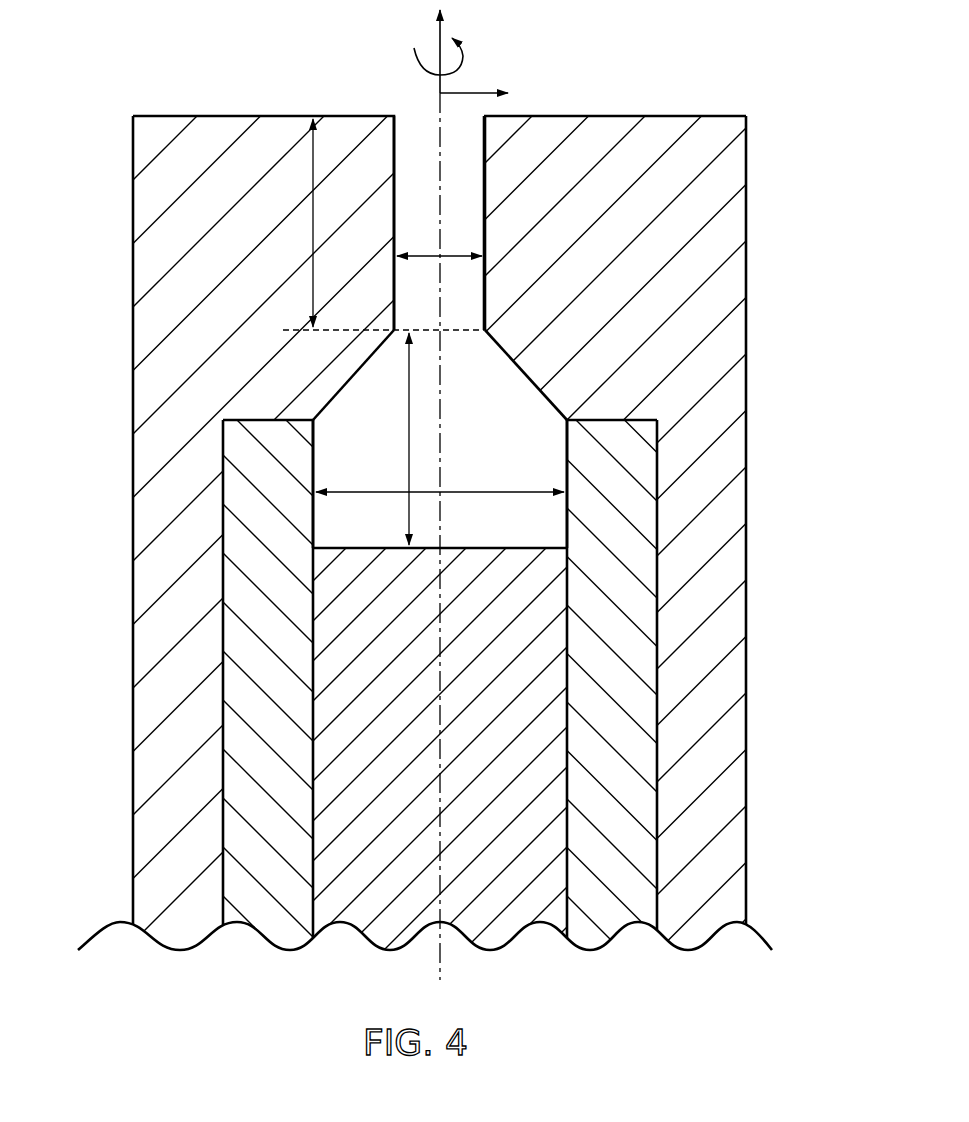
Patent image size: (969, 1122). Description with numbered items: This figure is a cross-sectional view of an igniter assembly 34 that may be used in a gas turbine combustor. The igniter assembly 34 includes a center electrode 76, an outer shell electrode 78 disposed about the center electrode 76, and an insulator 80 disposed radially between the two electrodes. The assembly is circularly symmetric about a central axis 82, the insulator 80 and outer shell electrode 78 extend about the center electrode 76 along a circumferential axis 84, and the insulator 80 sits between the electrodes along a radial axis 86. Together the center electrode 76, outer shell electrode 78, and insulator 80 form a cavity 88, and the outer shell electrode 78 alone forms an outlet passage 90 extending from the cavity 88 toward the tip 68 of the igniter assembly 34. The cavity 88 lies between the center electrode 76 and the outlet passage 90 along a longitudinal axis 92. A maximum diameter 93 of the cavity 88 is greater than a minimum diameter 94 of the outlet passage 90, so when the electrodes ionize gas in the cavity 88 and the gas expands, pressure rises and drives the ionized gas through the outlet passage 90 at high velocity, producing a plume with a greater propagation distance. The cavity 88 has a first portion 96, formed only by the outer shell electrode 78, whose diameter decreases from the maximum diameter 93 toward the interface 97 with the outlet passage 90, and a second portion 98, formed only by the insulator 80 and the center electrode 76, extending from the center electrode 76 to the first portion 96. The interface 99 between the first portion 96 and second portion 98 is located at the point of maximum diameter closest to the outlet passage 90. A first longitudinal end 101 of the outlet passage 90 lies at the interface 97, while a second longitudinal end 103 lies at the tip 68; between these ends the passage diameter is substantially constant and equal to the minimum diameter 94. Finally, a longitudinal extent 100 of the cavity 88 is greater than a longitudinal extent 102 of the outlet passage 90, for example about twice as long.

The igniter assembly 34 is at (820, 385).
The tip 68 is at (484, 550).
The center electrode 76 is at (540, 738).
The outer shell electrode 78 is at (733, 562).
The insulator 80 is at (630, 652).
The central axis 82 is at (438, 146).
The circumferential axis 84 is at (413, 50).
The radial axis 86 is at (466, 91).
The cavity 88 is at (533, 462).
The outlet passage 90 is at (465, 162).
The longitudinal axis 92 is at (438, 35).
The maximum diameter of the cavity 93 is at (515, 490).
The minimum diameter of the outlet passage 94 is at (458, 250).
The first portion of the cavity 96 is at (360, 402).
The interface between the cavity and the outlet passage 97 is at (475, 338).
The second portion of the cavity 98 is at (363, 525).
The interface between the first portion and the second portion 99 is at (323, 427).
The longitudinal extent of the cavity 100 is at (410, 385).
The first longitudinal end of the outlet passage 101 is at (476, 318).
The longitudinal extent of the outlet passage 102 is at (313, 172).
The second longitudinal end of the outlet passage 103 is at (464, 123).